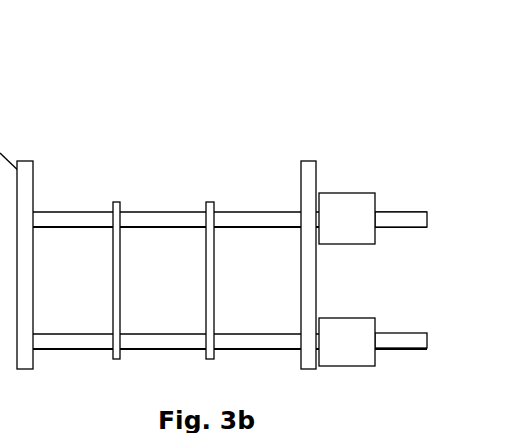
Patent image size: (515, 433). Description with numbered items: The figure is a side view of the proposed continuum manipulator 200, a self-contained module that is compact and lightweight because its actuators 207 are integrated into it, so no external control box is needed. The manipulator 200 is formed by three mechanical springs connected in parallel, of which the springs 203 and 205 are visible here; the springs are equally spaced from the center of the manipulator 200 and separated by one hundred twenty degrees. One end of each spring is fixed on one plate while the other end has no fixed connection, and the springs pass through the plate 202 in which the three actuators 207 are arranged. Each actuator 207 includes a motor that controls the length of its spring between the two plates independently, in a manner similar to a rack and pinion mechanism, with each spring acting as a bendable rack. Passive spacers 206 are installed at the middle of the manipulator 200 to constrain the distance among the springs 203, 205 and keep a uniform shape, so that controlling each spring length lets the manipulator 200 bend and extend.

The continuum manipulator 200 is at (244, 221).
The plate 202 is at (309, 161).
The mechanical spring 203 is at (243, 212).
The mechanical spring 205 is at (411, 343).
The passive spacer 206 is at (115, 212).
The actuator 207 is at (352, 317).